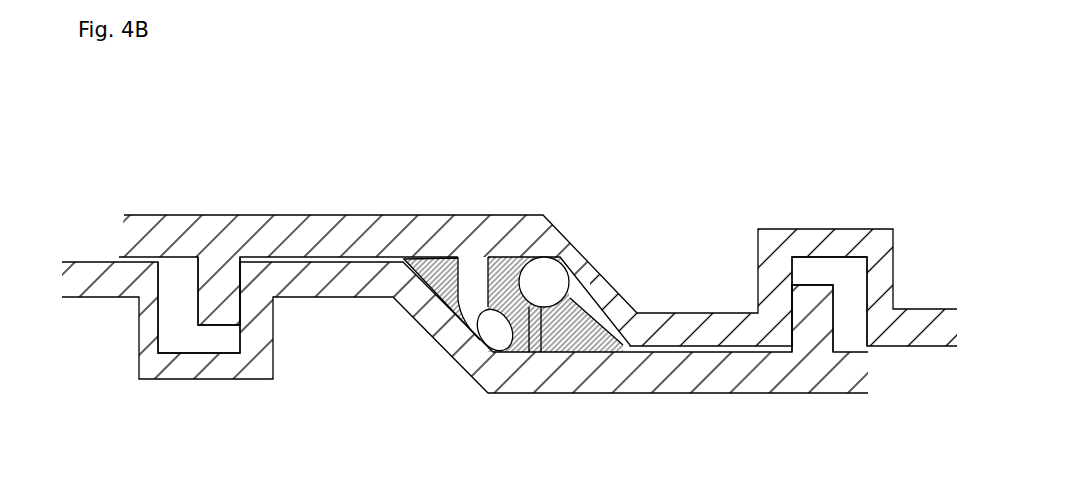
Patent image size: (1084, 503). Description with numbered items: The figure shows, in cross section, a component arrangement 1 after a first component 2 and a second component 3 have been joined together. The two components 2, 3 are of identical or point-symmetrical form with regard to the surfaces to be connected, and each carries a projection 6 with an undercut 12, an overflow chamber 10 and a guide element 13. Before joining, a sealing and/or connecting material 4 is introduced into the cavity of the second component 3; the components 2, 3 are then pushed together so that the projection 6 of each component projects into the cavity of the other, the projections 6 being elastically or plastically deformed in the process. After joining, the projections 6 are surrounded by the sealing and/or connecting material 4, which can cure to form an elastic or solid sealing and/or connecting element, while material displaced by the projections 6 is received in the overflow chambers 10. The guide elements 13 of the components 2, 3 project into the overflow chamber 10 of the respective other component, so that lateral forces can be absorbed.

The component arrangement 1 is at (141, 127).
The first component 2 is at (912, 322).
The second component 3 is at (853, 383).
The sealing and/or connecting material 4 is at (543, 300).
The projection 6 is at (548, 287).
The overflow chamber 10 is at (194, 337).
The undercut 12 is at (458, 302).
The guide element 13 is at (221, 301).